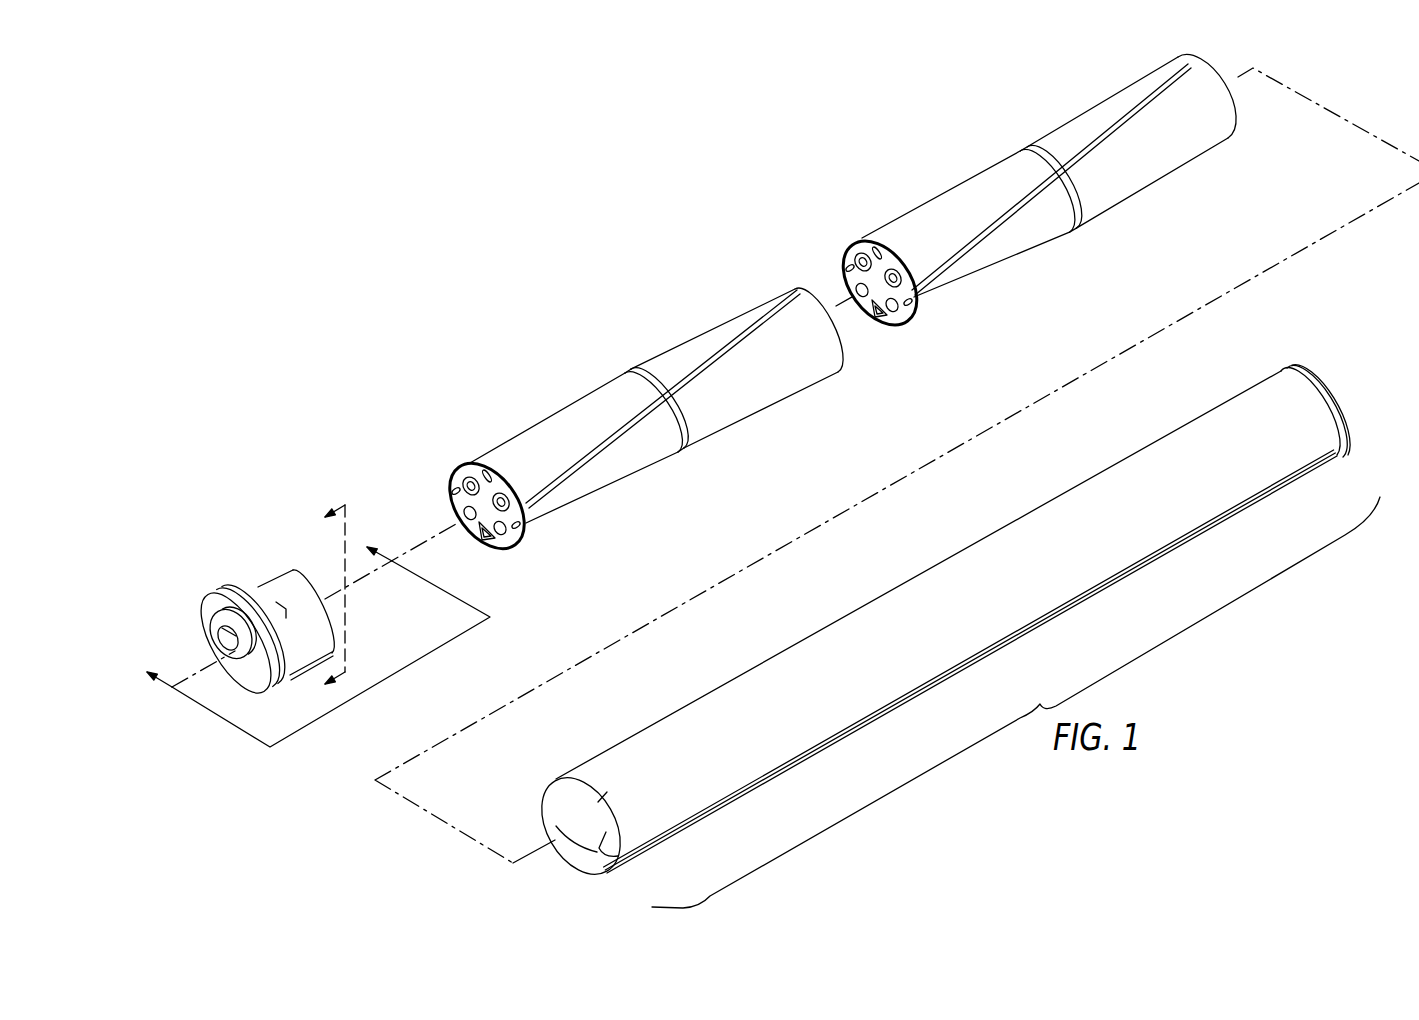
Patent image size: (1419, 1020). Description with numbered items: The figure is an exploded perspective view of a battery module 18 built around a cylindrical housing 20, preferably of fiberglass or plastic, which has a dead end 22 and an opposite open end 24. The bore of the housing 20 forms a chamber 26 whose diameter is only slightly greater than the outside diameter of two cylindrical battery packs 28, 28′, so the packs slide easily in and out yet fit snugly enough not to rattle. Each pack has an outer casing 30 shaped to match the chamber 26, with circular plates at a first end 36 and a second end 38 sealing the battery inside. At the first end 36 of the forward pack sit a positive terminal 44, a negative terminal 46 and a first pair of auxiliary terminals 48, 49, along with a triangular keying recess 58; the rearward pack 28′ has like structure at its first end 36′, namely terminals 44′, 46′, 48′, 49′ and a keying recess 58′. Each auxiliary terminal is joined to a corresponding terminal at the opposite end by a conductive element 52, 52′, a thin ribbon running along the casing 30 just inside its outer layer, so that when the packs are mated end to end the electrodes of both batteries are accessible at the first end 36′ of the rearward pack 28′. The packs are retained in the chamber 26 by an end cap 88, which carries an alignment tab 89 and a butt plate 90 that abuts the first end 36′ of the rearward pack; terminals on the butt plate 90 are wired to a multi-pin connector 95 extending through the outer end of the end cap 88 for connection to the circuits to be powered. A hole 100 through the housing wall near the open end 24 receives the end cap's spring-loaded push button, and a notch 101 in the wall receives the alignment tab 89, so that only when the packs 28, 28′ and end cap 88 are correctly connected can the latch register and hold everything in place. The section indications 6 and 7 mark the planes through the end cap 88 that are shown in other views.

The battery module 18 is at (748, 226).
The cylindrical housing 20 is at (873, 612).
The dead end 22 is at (1330, 386).
The open end 24 is at (580, 847).
The chamber 26 is at (570, 808).
The battery pack 28 is at (953, 183).
The rearward battery pack 28′ is at (636, 366).
The outer casing 30 is at (1086, 108).
The first end 36 is at (852, 250).
The first end of rearward battery pack 36′ is at (508, 470).
The second end 38 is at (1218, 78).
The positive terminal 44 is at (856, 252).
The positive terminal of rearward battery pack 44′ is at (467, 473).
The negative terminal 46 is at (848, 287).
The negative terminal of rearward battery pack 46′ is at (458, 510).
The auxiliary terminal 48 is at (914, 288).
The auxiliary terminal of rearward battery pack 48′ is at (526, 505).
The auxiliary terminal 49 is at (897, 321).
The auxiliary terminal of rearward battery pack 49′ is at (506, 546).
The conductive element 52 is at (1093, 148).
The conductive element of rearward battery pack 52′ is at (700, 370).
The triangular keying recess 58 is at (870, 321).
The keying recess of rearward battery pack 58′ is at (487, 535).
The end cap 88 is at (312, 658).
The alignment tab 89 is at (263, 597).
The butt plate 90 is at (310, 577).
The multi-pin connector 95 is at (232, 617).
The hole 100 is at (607, 848).
The notch 101 is at (590, 787).
The section line 6- 6 is at (262, 611).
The section line 7- 7 is at (329, 600).